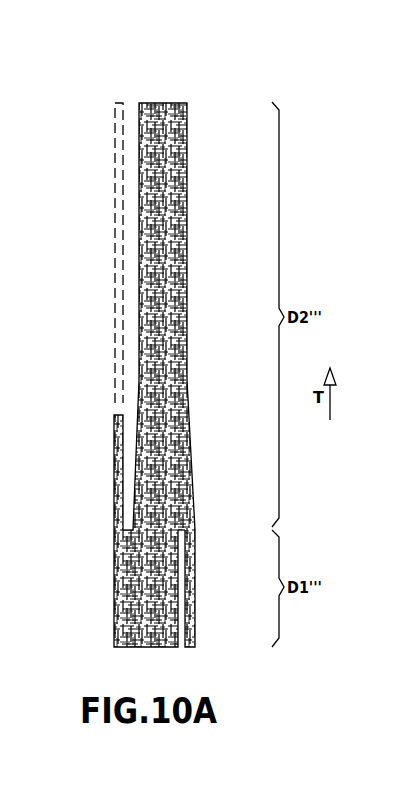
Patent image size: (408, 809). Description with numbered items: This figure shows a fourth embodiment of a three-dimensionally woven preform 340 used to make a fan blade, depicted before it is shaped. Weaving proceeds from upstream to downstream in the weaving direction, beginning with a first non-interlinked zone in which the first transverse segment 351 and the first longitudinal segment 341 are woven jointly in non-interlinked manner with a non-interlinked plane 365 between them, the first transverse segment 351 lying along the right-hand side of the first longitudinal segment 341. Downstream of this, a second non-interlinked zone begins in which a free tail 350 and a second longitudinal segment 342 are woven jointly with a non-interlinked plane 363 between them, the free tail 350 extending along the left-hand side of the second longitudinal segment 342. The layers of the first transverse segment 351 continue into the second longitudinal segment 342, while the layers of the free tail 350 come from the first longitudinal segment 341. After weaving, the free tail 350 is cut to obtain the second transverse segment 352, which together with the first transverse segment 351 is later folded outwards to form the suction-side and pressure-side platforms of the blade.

The three-dimensionally woven preform 340 is at (143, 392).
The free tail 350 is at (118, 312).
The second longitudinal segment 342 is at (185, 318).
The non-interlinked plane 363 is at (132, 432).
The second transverse segment 352 is at (115, 458).
The first longitudinal segment 341 is at (140, 596).
The first transverse segment 351 is at (196, 595).
The non-interlinked plane 365 is at (181, 628).